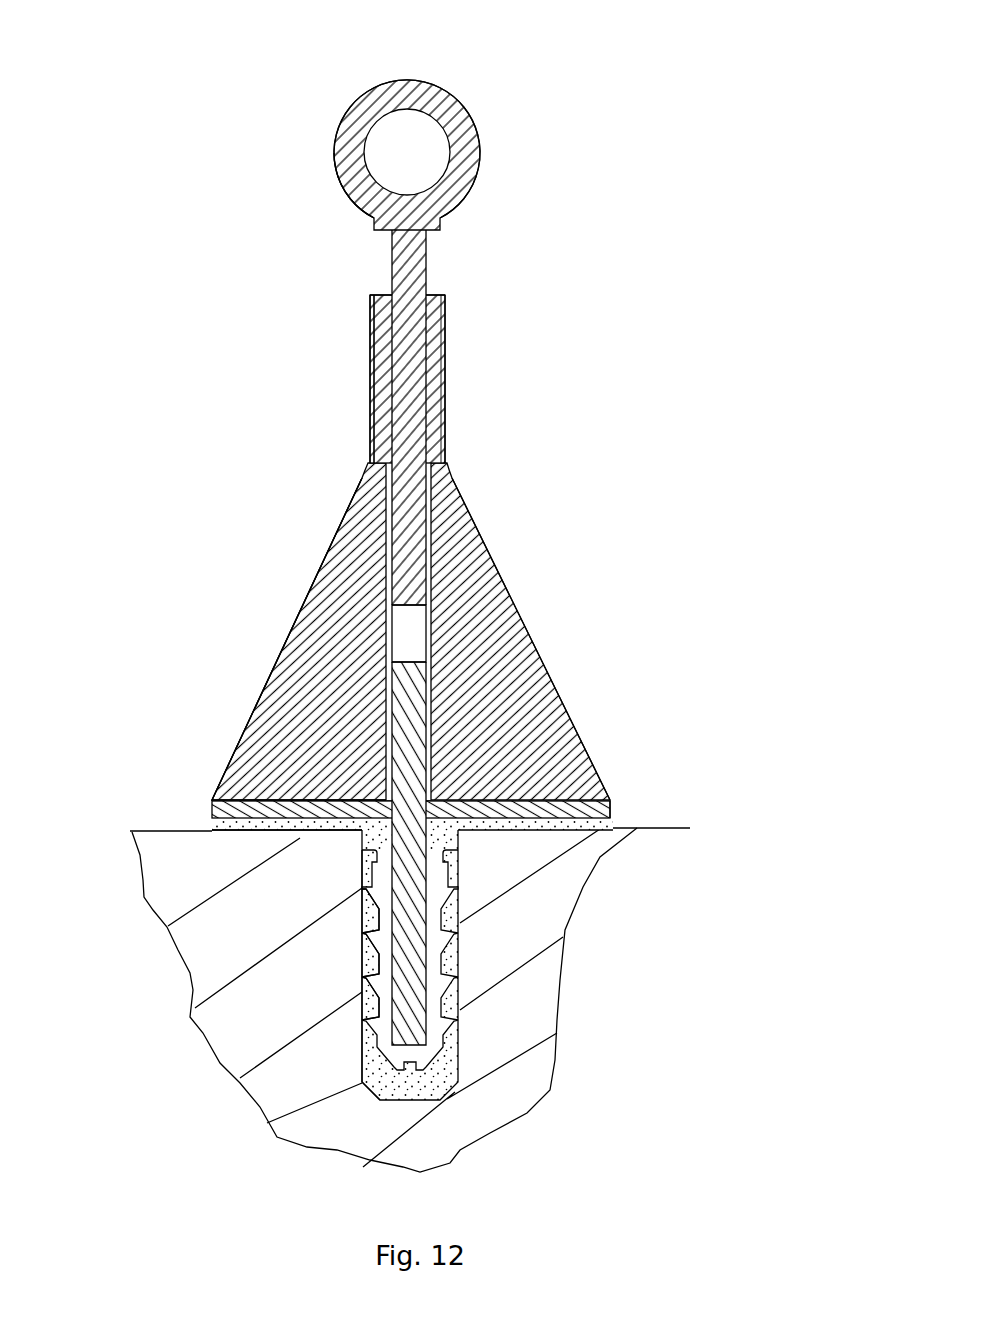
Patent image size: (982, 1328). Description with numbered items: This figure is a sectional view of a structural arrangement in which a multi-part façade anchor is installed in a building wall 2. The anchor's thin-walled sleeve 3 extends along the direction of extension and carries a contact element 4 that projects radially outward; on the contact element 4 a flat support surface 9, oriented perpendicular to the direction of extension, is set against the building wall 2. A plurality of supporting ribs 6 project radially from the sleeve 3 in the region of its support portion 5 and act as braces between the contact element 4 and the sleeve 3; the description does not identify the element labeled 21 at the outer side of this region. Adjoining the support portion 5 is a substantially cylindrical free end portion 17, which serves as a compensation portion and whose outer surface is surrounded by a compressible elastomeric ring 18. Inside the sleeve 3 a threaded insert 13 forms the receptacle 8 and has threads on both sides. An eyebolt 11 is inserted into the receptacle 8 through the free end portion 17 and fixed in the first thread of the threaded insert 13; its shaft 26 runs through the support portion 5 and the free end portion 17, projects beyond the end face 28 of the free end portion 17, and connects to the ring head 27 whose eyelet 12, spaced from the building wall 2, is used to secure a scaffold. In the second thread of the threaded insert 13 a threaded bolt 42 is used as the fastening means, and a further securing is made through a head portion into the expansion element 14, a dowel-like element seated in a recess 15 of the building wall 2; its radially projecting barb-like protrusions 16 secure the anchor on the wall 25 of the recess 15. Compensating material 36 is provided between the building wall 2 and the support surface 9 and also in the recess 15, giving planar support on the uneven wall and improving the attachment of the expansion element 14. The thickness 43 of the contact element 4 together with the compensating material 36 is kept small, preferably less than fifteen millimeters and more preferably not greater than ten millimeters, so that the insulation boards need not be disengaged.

The building wall 2 is at (547, 1002).
The sleeve 3 is at (375, 428).
The contact element 4 is at (186, 812).
The support portion 5 is at (619, 588).
The supporting ribs 6 is at (300, 658).
The receptacle 8 is at (400, 628).
The support surface 9 is at (290, 828).
The eyebolt 11 is at (536, 138).
The eyelet 12 is at (412, 140).
The threaded insert 13 is at (425, 636).
The expansion element 14 is at (447, 898).
The recess 15 is at (476, 1056).
The barb-like protrusions 16 is at (362, 1025).
The free end portion 17 is at (564, 363).
The elastomeric ring 18 is at (445, 342).
The conical surface 21 is at (527, 631).
The wall of the recess 25 is at (362, 957).
The shaft 26 is at (407, 409).
The ring head 27 is at (286, 152).
The end face 28 is at (381, 292).
The compensating material 36 is at (383, 1092).
The threaded bolt 42 is at (413, 762).
The thickness 43 is at (653, 765).